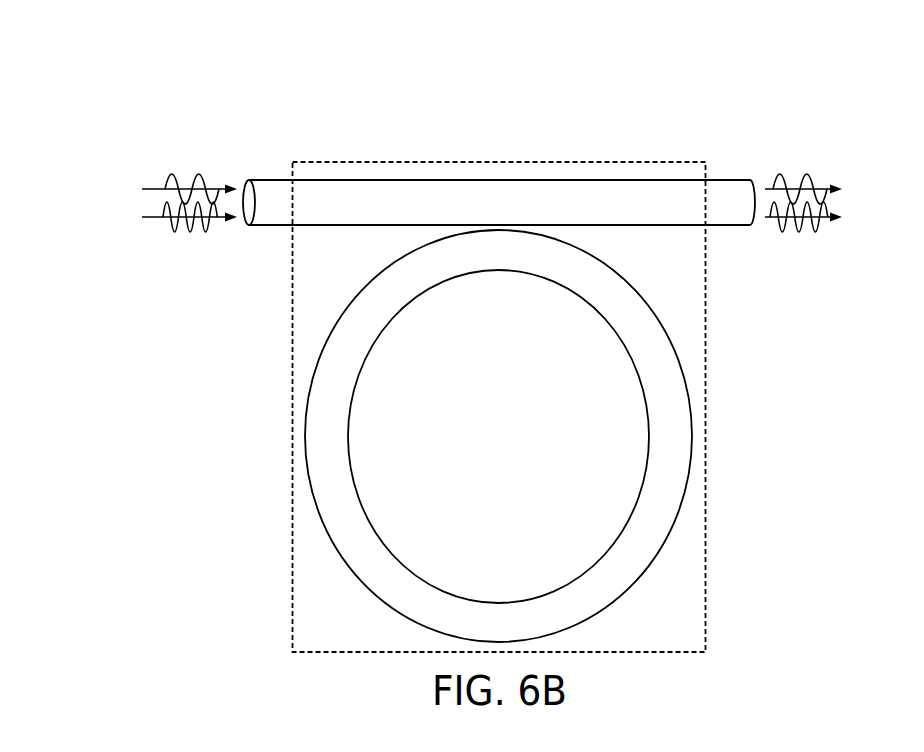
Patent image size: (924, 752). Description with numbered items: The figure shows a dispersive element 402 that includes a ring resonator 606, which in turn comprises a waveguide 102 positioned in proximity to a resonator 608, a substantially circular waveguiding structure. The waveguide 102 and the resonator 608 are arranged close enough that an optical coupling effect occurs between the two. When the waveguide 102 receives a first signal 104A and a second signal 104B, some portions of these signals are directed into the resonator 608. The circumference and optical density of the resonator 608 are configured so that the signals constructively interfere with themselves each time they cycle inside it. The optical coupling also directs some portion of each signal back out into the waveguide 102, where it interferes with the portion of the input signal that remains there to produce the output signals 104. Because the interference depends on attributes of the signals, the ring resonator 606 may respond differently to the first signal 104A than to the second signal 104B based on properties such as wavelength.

The dispersive element 402 is at (540, 87).
The ring resonator 606 is at (327, 161).
The waveguide 102 is at (515, 212).
The resonator 608 is at (517, 260).
The first signal 104A is at (158, 188).
The second signal 104B is at (158, 216).
The output signals 104 is at (840, 188).